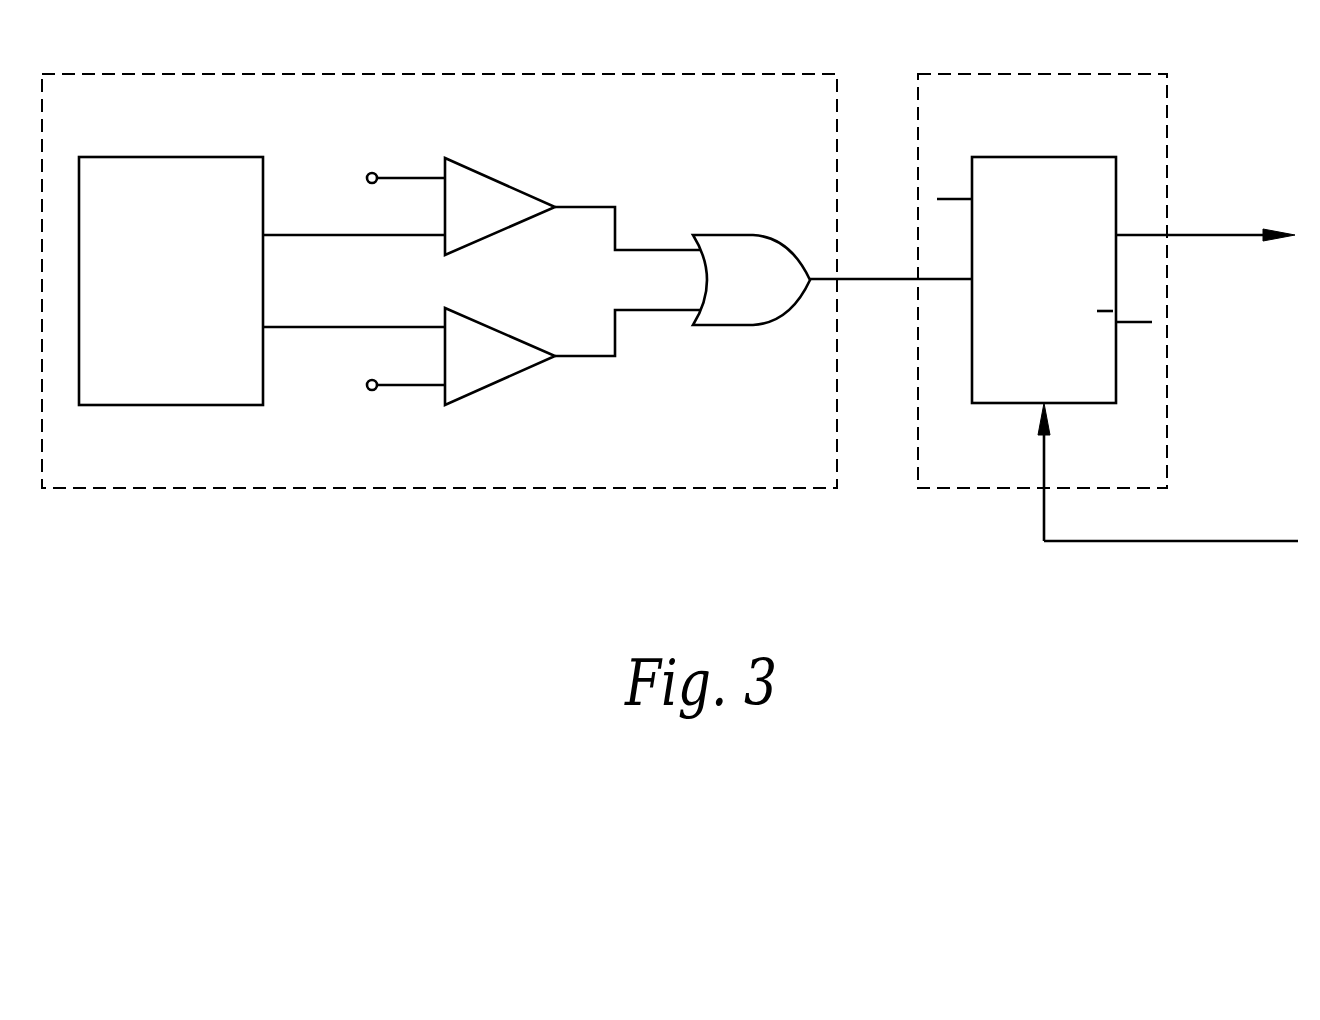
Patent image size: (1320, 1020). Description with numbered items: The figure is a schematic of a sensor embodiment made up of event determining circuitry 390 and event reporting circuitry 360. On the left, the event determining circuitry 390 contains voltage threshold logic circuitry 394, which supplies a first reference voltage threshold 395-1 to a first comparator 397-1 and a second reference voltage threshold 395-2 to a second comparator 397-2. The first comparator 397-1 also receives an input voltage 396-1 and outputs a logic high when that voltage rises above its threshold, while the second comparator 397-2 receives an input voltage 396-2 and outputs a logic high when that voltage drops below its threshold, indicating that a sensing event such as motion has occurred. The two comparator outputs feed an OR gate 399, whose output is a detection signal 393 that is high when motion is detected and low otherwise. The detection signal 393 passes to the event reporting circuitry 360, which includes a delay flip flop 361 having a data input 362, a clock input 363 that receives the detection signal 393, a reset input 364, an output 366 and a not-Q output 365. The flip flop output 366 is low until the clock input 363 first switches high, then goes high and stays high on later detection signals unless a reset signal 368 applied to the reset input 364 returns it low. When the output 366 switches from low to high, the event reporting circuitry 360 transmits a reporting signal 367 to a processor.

The event determining circuitry 390 is at (802, 73).
The event reporting circuitry 360 is at (1137, 73).
The voltage threshold logic circuitry 394 is at (240, 155).
The input voltage 396-1 is at (388, 175).
The reference voltage threshold 395-1 is at (388, 233).
The comparator 397-1 is at (500, 180).
The reference voltage threshold 395-2 is at (388, 325).
The input voltage 396-2 is at (388, 383).
The comparator 397-2 is at (500, 330).
The OR gate 399 is at (725, 235).
The detection signal 393 is at (872, 278).
The delay flip flop 361 is at (1053, 157).
The data input 362 is at (993, 197).
The output 366 is at (1095, 238).
The clock input 363 is at (1016, 280).
The output 365 is at (1095, 323).
The reset input 364 is at (1042, 372).
The reporting signal 367 is at (1222, 233).
The reset signal 368 is at (1222, 540).